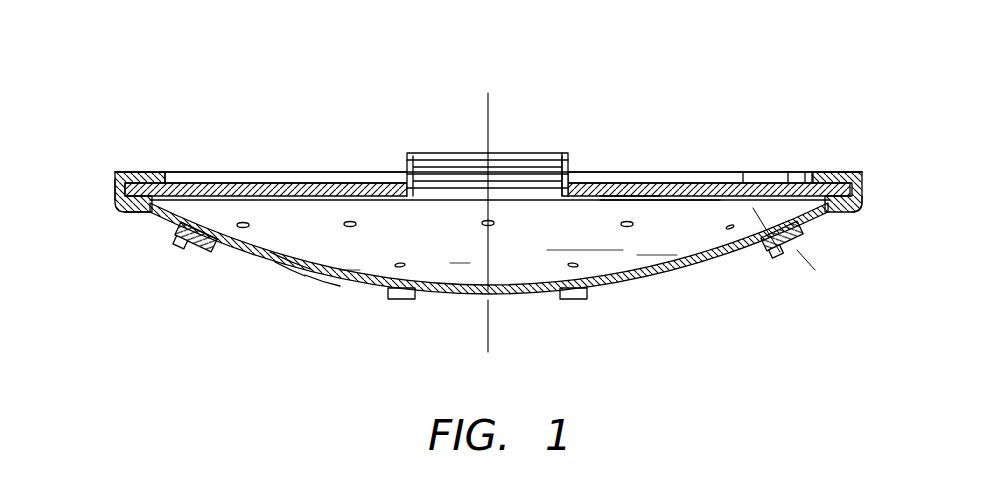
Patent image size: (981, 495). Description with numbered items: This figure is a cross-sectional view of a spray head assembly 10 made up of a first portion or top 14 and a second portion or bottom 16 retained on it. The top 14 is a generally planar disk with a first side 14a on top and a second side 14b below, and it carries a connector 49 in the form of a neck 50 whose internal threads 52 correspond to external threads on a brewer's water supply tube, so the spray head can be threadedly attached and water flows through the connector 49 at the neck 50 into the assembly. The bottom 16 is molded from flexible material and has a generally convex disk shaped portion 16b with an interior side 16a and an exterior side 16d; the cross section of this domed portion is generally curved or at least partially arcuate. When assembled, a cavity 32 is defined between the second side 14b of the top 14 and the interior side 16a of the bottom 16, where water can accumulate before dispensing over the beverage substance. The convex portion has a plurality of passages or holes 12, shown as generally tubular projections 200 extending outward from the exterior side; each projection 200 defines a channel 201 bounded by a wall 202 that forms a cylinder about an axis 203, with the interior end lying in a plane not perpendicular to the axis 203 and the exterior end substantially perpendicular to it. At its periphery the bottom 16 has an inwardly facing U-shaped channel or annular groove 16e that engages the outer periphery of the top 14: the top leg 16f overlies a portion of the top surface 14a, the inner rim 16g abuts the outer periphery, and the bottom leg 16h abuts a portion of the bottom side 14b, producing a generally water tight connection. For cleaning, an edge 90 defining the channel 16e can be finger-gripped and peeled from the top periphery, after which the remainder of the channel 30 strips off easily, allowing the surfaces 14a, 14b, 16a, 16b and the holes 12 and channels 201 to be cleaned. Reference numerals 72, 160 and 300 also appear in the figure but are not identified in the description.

The spray head assembly 10 is at (789, 78).
The passages 12 is at (627, 228).
The first portion 14 is at (693, 183).
The first side 14a is at (720, 183).
The second side 14b is at (660, 206).
The second portion 16 is at (352, 290).
The interior side 16a is at (292, 262).
The generally convex disk shaped portion 16b is at (288, 268).
The exterior side 16d is at (322, 281).
The channel 16e is at (114, 175).
The top leg of the U-shaped channel 16f is at (150, 172).
The inner rim 16g is at (846, 185).
The bottom leg 16h is at (140, 212).
The channel 30 is at (852, 208).
The cavity 32 is at (422, 244).
The connector 49 is at (407, 160).
The neck 50 is at (578, 172).
The internal threads 52 is at (565, 163).
The flange wall 72 is at (114, 188).
The edge 90 is at (173, 172).
The plate portion 160 is at (617, 184).
The projections 200 is at (590, 298).
The channel 201 is at (184, 247).
The wall 202 is at (177, 226).
The axis 203 is at (810, 252).
The center axis 300 is at (487, 106).